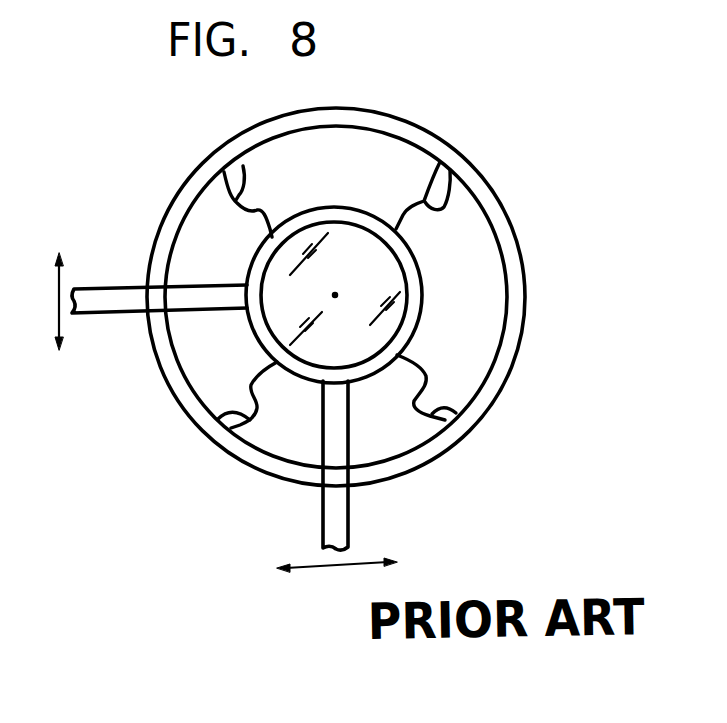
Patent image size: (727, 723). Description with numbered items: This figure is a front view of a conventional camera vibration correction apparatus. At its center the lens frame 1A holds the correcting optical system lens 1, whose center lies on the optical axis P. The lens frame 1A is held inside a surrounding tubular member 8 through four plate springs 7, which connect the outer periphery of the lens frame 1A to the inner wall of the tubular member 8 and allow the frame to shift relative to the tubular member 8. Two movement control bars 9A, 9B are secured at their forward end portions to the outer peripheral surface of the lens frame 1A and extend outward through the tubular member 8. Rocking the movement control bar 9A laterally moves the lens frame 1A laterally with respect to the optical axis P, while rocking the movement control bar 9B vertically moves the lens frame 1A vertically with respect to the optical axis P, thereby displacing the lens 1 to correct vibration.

The correcting optical system lens 1 is at (361, 252).
The lens frame 1A is at (306, 219).
The plate springs 7 is at (243, 166).
The tubular member 8 is at (507, 235).
The movement control bar 9A is at (335, 513).
The movement control bar 9B is at (119, 295).
The optical axis P is at (343, 298).